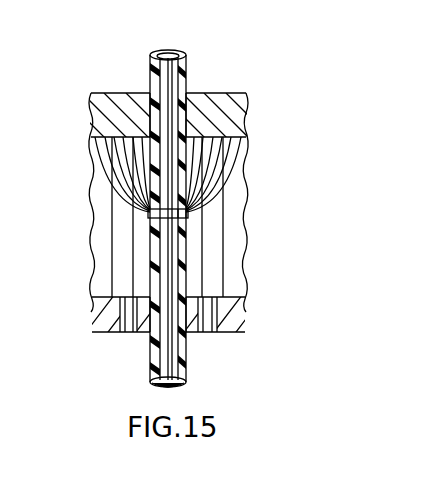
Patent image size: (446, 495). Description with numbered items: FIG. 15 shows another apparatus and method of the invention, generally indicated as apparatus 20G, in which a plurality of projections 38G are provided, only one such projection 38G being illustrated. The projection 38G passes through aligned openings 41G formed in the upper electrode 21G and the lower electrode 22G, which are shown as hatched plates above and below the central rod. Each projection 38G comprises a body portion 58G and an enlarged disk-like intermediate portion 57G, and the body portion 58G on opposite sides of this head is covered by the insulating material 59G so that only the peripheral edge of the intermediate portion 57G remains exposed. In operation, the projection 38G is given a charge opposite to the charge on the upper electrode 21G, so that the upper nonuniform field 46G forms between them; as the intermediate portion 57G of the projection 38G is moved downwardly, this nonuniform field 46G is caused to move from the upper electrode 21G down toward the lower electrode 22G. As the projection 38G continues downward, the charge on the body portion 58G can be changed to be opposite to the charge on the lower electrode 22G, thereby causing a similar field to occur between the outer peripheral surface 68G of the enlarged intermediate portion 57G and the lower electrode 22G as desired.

The apparatus 20G is at (268, 111).
The upper electrode 21G is at (121, 98).
The lower electrode 22G is at (245, 320).
The aligned openings 41G is at (150, 113).
The body portion 58G is at (180, 73).
The projection 38G is at (177, 107).
The insulating material 59G is at (153, 147).
The upper nonuniform field 46G is at (237, 167).
The enlarged disk-like intermediate portion 57G is at (148, 215).
The outer peripheral surface 68G is at (188, 219).